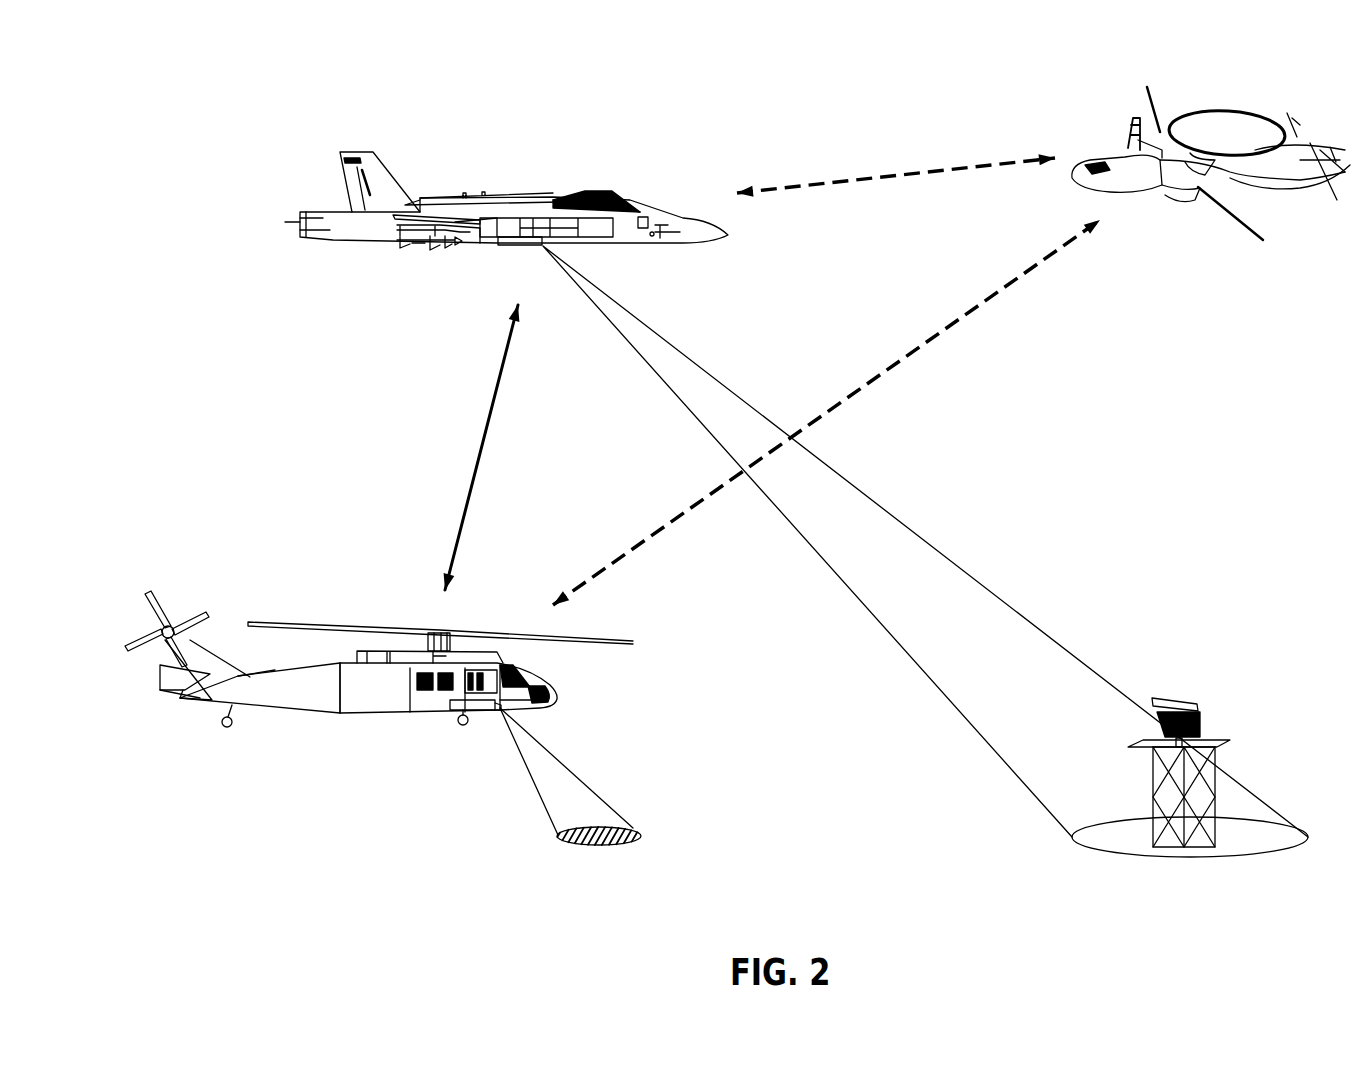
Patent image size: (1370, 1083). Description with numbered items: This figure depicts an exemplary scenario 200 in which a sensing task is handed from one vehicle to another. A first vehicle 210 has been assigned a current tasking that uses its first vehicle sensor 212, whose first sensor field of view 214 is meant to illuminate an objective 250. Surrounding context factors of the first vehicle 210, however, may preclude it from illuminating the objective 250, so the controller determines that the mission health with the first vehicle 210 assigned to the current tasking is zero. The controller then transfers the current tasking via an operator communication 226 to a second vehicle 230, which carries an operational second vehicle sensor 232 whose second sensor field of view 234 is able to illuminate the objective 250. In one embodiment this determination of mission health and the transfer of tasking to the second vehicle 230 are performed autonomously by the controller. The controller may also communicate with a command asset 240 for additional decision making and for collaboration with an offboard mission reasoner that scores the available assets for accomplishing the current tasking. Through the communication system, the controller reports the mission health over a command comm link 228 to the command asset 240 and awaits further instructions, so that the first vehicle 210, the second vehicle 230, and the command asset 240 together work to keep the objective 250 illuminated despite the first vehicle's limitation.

The exemplary scenario 200 is at (130, 148).
The first vehicle 210 is at (402, 608).
The first vehicle sensor 212 is at (488, 712).
The first sensor field of view 214 is at (558, 837).
The operator communication 226 is at (490, 407).
The command comm link 228 is at (873, 181).
The second vehicle 230 is at (486, 160).
The second vehicle sensor 232 is at (510, 247).
The second sensor field of view 234 is at (1072, 838).
The command asset 240 is at (1102, 118).
The objective 250 is at (1169, 668).